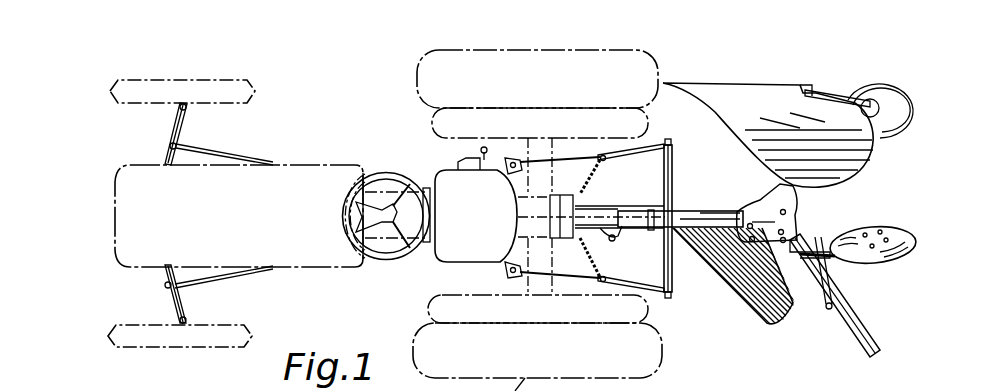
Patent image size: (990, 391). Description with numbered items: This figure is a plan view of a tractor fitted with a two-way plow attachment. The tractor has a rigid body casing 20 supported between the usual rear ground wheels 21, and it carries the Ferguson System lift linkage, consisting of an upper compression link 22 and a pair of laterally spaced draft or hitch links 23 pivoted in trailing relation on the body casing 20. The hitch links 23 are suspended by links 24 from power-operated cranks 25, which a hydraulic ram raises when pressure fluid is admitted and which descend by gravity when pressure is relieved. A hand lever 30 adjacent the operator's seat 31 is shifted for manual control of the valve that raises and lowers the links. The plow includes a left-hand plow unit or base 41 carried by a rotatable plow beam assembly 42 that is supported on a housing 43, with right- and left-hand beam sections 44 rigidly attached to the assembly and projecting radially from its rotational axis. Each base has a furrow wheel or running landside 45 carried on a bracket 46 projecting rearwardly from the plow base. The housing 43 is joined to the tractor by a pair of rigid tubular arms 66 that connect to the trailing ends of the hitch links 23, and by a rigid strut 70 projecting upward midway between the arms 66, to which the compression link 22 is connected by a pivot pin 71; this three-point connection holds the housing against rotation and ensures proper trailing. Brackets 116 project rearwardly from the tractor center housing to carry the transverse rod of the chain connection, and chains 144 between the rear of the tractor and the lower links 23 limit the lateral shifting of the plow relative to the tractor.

The body casing 20 is at (561, 242).
The rear ground wheels 21 is at (580, 52).
The upper compression link 22 is at (612, 205).
The draft or hitch links 23 is at (658, 143).
The links 24 is at (563, 142).
The power-operated cranks 25 is at (503, 174).
The hand lever 30 is at (468, 152).
The operator's seat 31 is at (440, 262).
The left-hand plow unit or base 41 is at (748, 312).
The plow beam assembly 42 is at (757, 204).
The housing 43 is at (709, 204).
The beam sections 44 is at (800, 180).
The furrow wheel or running landside 45 is at (900, 103).
The bracket 46 is at (833, 100).
The rigid arms 66 is at (674, 166).
The rigid strut 70 is at (676, 214).
The pivot pin 71 is at (652, 230).
The brackets 116 is at (606, 247).
The chains 144 is at (580, 218).